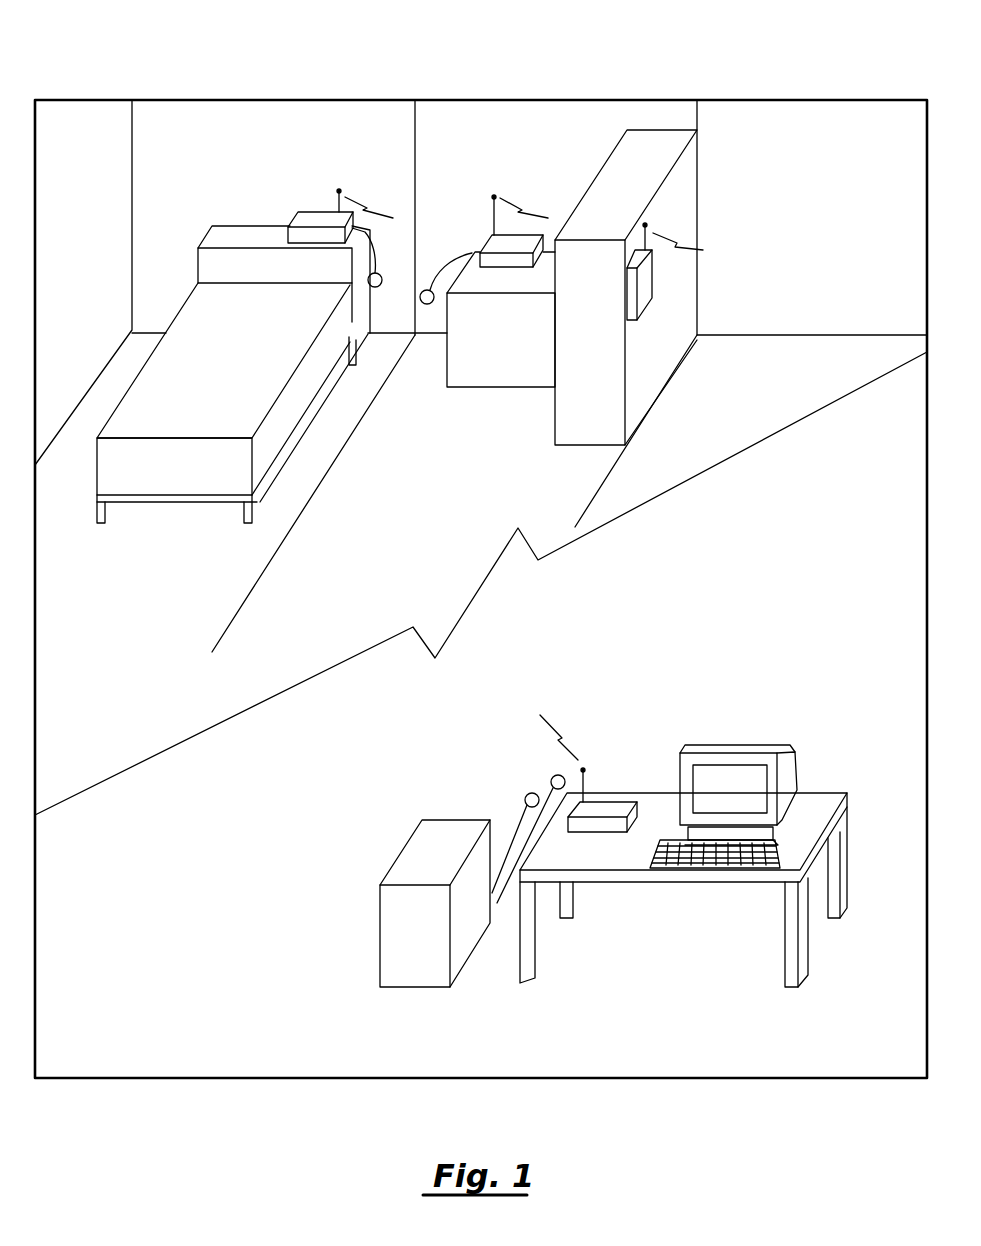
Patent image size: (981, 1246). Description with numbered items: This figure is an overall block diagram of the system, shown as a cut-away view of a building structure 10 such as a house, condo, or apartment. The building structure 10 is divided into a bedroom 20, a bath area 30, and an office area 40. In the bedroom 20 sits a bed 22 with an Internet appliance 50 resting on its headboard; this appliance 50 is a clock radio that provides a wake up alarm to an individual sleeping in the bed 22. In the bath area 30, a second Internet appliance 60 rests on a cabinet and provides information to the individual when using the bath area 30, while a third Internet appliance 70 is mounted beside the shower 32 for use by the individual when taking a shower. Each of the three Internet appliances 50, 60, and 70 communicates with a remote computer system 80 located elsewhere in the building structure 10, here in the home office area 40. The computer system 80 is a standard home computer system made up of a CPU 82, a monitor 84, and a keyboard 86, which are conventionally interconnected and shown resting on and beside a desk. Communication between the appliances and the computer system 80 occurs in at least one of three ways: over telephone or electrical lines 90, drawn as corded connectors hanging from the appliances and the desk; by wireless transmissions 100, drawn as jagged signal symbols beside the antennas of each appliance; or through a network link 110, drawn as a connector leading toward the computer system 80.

The building structure 10 is at (604, 98).
The bedroom 20 is at (250, 153).
The bed 22 is at (232, 380).
The bath area 30 is at (535, 140).
The shower 32 is at (606, 361).
The office area 40 is at (782, 677).
The Internet appliance 50 is at (310, 218).
The Internet appliance 60 is at (488, 243).
The Internet appliance 70 is at (648, 292).
The remote computer system 80 is at (617, 737).
The CPU 82 is at (422, 858).
The monitor 84 is at (790, 770).
The keyboard 86 is at (726, 868).
The telephone lines 90 is at (447, 253).
The wireless transmissions 100 is at (358, 202).
The network link 110 is at (551, 787).